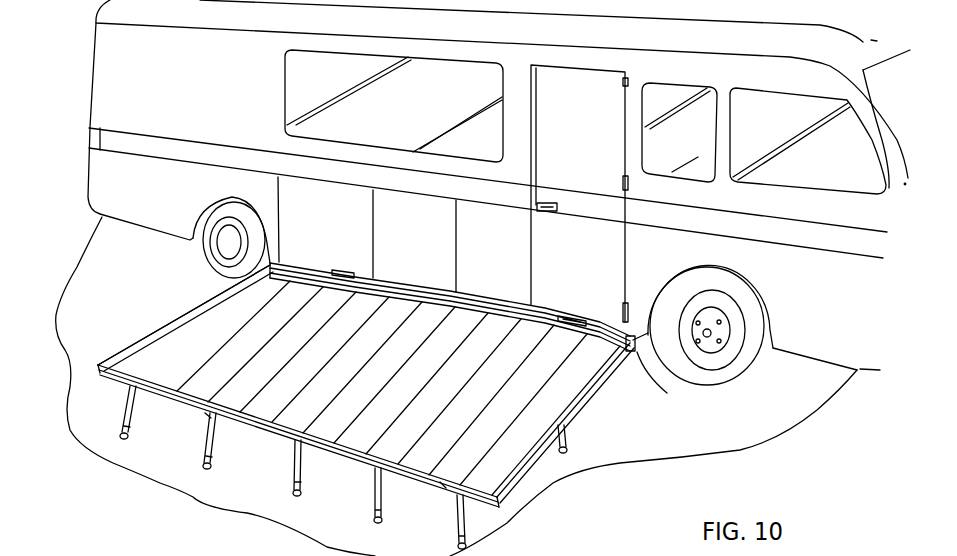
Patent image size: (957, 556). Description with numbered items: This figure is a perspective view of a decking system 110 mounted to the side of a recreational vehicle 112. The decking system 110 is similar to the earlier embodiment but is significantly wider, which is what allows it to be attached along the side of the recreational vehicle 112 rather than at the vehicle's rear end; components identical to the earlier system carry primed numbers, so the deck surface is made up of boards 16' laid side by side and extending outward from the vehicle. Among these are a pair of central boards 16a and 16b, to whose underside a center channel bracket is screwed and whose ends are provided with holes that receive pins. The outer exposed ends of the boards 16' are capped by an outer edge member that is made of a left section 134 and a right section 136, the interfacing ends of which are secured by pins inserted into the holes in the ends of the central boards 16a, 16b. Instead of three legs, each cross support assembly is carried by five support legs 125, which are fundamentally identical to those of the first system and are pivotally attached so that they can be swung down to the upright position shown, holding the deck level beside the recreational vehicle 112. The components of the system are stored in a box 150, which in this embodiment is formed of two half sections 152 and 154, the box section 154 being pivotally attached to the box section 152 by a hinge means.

The boards 16' is at (366, 384).
The central board 16a is at (327, 425).
The central board 16b is at (295, 418).
The decking system 110 is at (381, 398).
The recreational vehicle 112 is at (843, 352).
The support legs 125 is at (138, 403).
The left section of outer edge member 134 is at (204, 412).
The right section of outer edge member 136 is at (443, 485).
The box 150 is at (660, 387).
The box section 152 is at (388, 283).
The box section 154 is at (533, 312).